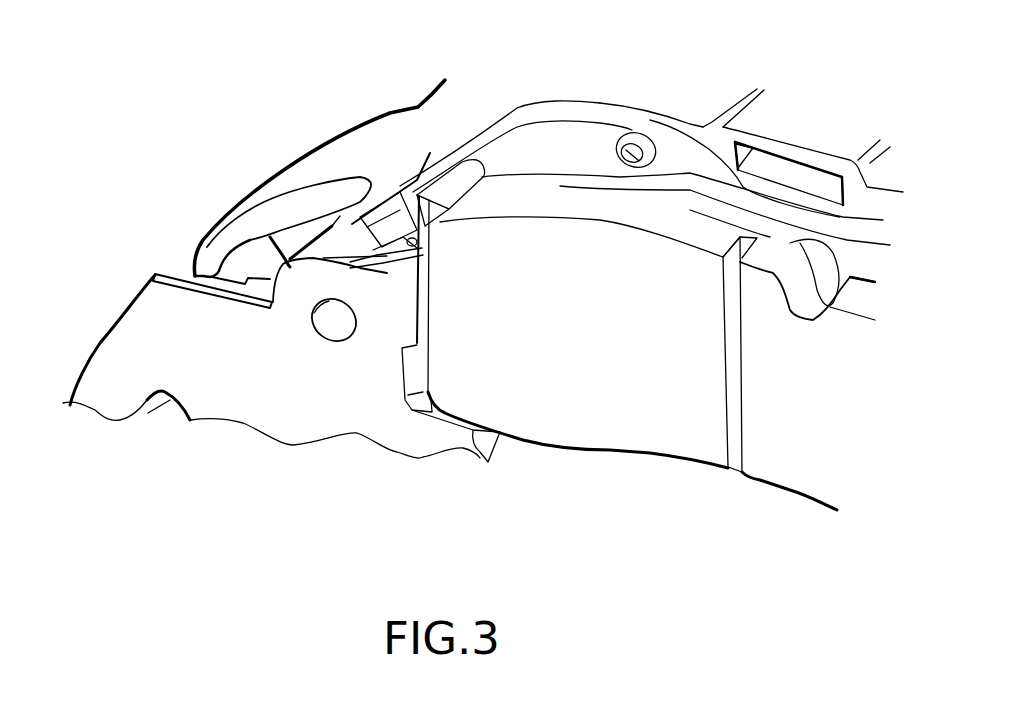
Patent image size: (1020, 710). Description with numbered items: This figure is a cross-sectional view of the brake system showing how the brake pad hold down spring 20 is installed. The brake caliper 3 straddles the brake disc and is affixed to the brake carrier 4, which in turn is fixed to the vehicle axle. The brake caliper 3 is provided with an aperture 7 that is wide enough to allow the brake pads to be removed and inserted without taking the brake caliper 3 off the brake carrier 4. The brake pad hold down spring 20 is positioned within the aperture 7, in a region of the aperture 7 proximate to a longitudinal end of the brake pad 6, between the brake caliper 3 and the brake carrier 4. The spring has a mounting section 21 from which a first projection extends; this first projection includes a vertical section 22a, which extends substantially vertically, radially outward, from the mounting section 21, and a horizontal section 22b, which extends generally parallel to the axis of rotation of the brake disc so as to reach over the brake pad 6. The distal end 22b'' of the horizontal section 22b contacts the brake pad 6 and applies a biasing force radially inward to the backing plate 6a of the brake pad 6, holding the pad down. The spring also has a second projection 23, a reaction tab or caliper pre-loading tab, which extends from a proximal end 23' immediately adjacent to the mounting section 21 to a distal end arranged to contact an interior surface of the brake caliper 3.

The brake caliper 3 is at (303, 172).
The brake carrier 4 is at (357, 405).
The brake pad 6 is at (805, 240).
The backing plate 6a is at (554, 178).
The aperture 7 is at (706, 157).
The brake pad hold down spring 20 is at (432, 163).
The mounting section 21 is at (390, 257).
The vertical section 22a is at (443, 218).
The horizontal section 22b is at (482, 209).
The distal end of the horizontal section 22b'' is at (522, 136).
The second projection 23 is at (382, 199).
The proximal end of the second projection 23' is at (330, 279).